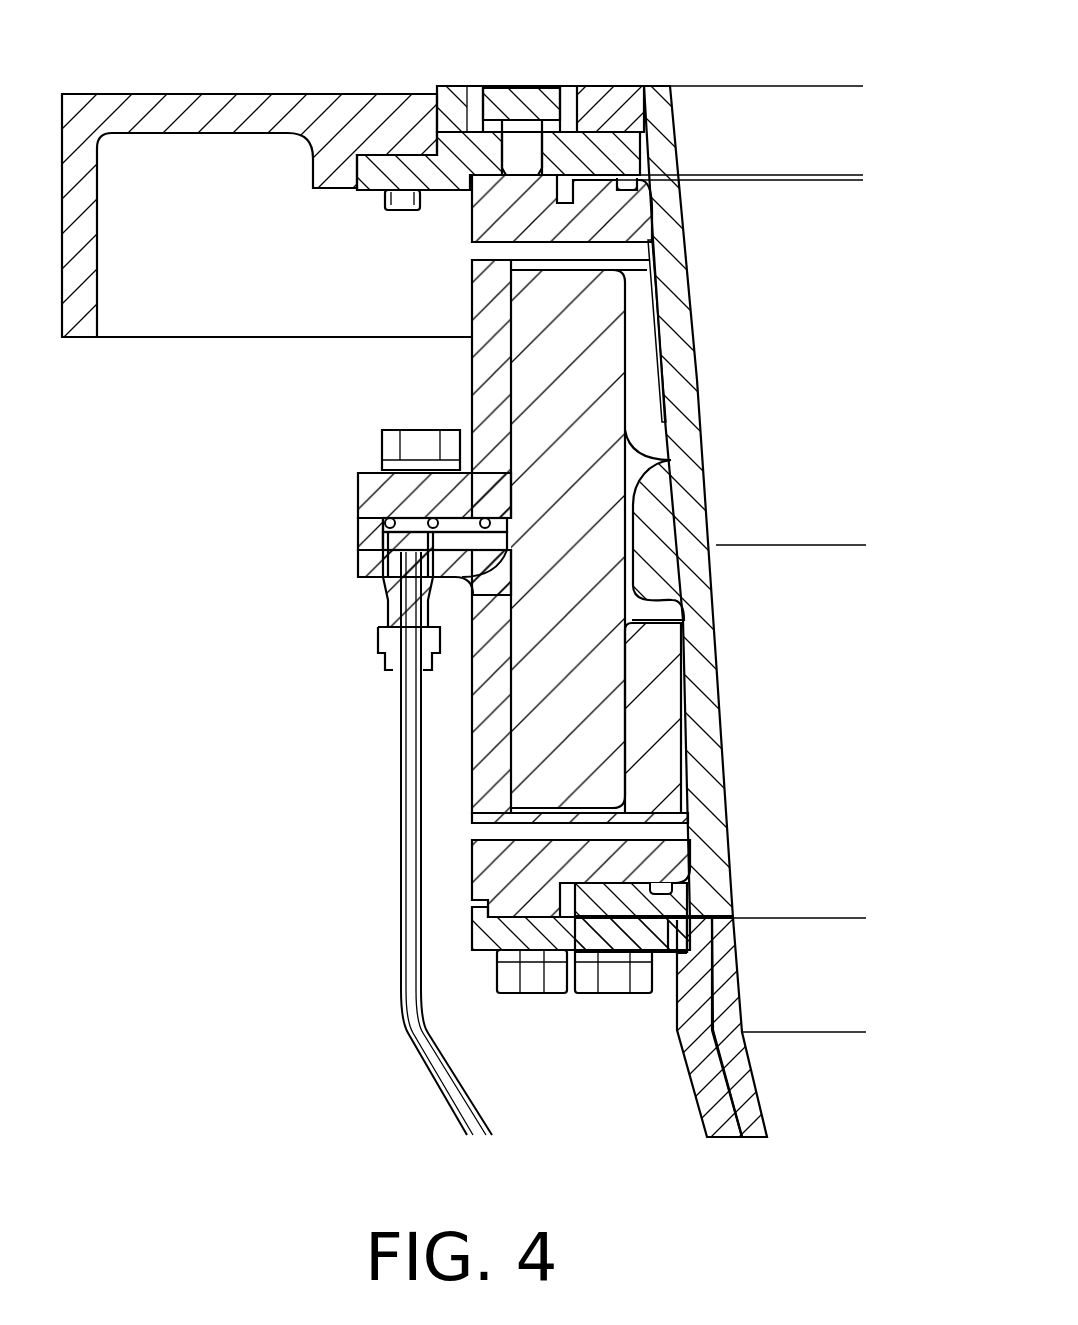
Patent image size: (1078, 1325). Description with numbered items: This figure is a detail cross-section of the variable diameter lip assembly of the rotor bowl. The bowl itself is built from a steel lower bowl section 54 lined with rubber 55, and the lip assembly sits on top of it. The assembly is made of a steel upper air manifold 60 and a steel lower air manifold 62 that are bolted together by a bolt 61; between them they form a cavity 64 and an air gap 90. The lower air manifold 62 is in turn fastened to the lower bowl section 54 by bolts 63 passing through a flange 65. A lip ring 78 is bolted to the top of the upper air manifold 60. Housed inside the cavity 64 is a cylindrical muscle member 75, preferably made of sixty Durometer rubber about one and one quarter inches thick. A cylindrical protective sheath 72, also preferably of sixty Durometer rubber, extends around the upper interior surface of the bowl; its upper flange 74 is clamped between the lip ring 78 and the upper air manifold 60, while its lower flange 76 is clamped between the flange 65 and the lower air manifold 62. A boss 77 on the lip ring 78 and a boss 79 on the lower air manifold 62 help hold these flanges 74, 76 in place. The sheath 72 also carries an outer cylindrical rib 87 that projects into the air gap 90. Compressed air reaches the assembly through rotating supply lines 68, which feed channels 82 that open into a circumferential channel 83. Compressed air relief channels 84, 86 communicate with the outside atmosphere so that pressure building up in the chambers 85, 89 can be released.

The lower bowl section 54 is at (698, 1113).
The rubber lining 55 is at (765, 1104).
The upper air manifold 60 is at (472, 300).
The bolt 61 is at (383, 442).
The lower air manifold 62 is at (462, 704).
The bolts 63 is at (549, 995).
The cavity 64 is at (512, 345).
The flange 65 is at (482, 928).
The rotating supply lines 68 is at (398, 813).
The cylindrical protective sheath 72 is at (683, 197).
The flange 74 is at (597, 175).
The cylindrical muscle member 75 is at (550, 388).
The flange 76 is at (668, 955).
The boss 77 is at (628, 176).
The lip ring 78 is at (370, 94).
The boss 79 is at (622, 920).
The channels 82 is at (372, 563).
The circumferential channel 83 is at (462, 588).
The compressed air relief channel 84 is at (483, 247).
The chamber 85 is at (662, 329).
The compressed air relief channel 86 is at (474, 835).
The outer cylindrical rib 87 is at (668, 530).
The chamber 89 is at (683, 770).
The air gap 90 is at (650, 482).